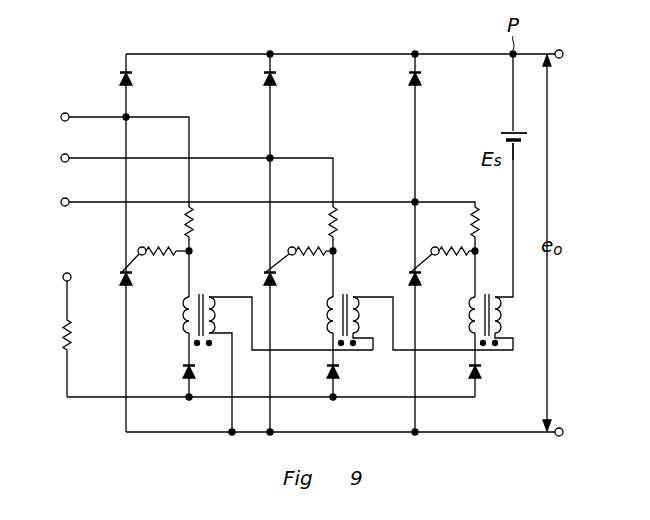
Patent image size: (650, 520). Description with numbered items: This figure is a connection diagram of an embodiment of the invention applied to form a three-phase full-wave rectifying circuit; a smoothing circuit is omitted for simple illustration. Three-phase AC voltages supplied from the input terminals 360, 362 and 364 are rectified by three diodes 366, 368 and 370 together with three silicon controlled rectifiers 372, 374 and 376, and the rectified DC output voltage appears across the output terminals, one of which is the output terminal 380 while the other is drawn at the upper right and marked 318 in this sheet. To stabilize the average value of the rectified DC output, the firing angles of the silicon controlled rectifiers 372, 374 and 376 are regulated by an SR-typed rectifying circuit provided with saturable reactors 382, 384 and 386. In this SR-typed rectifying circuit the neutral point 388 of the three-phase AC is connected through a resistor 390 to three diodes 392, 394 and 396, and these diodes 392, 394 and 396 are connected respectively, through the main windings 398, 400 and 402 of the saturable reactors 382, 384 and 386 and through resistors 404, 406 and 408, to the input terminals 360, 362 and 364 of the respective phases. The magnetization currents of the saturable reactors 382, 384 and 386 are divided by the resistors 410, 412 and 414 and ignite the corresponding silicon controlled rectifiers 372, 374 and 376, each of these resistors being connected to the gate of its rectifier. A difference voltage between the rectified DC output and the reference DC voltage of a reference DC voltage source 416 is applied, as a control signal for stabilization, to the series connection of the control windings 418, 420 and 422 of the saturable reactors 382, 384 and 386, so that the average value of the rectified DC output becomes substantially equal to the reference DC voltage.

The positive output terminal 318 is at (564, 53).
The output terminal 380 is at (564, 430).
The input terminal 360 is at (64, 114).
The input terminal 362 is at (64, 155).
The input terminal 364 is at (64, 199).
The diode 366 is at (134, 79).
The diode 368 is at (278, 79).
The diode 370 is at (423, 79).
The silicon controlled rectifier 372 is at (118, 279).
The silicon controlled rectifier 374 is at (278, 280).
The silicon controlled rectifier 376 is at (423, 280).
The saturable reactor 382 is at (240, 282).
The saturable reactor 384 is at (382, 282).
The saturable reactor 386 is at (512, 284).
The neutral point 388 is at (65, 273).
The resistor 390 is at (66, 338).
The diode 392 is at (183, 373).
The diode 394 is at (341, 372).
The diode 396 is at (483, 374).
The main winding 398 is at (183, 315).
The main winding 400 is at (328, 315).
The main winding 402 is at (470, 314).
The resistor 404 is at (194, 222).
The resistor 406 is at (338, 222).
The resistor 408 is at (480, 222).
The resistor 410 is at (162, 245).
The resistor 412 is at (315, 247).
The resistor 414 is at (447, 250).
The reference DC voltage source 416 is at (505, 131).
The control winding 418 is at (233, 324).
The control winding 420 is at (355, 324).
The control winding 422 is at (504, 309).